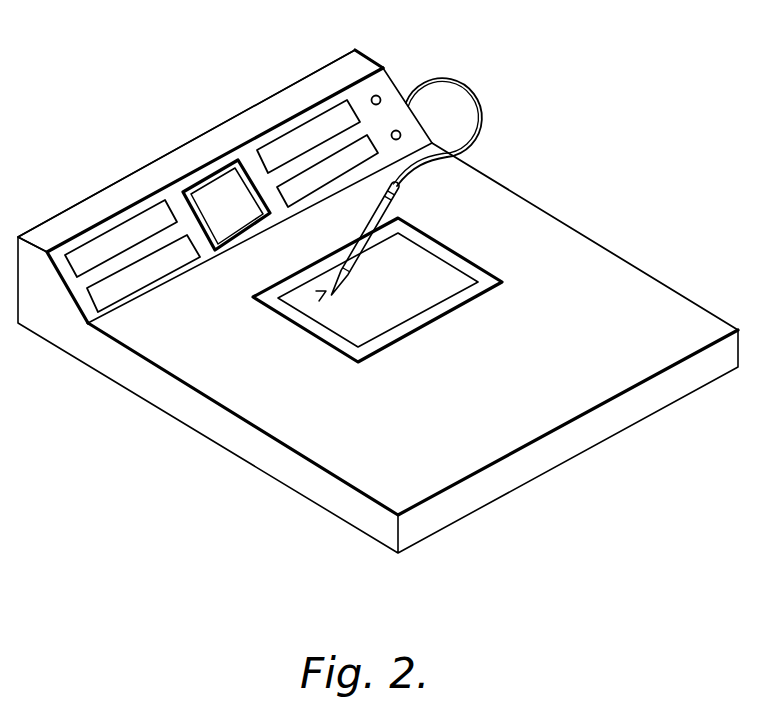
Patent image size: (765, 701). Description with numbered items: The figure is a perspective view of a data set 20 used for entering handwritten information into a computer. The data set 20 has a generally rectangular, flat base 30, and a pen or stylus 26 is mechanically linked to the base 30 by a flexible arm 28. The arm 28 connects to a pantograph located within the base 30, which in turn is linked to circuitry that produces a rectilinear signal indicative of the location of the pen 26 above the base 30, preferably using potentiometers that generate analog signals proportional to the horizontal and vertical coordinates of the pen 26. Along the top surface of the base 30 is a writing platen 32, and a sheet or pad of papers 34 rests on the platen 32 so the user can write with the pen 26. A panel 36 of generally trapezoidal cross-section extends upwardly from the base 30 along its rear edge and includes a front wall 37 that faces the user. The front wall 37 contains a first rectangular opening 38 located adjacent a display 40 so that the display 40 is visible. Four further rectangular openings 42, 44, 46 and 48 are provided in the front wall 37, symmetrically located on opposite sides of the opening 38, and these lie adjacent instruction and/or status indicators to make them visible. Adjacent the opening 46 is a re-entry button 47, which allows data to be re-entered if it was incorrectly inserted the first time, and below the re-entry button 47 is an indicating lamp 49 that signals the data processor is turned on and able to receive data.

The data set 20 is at (238, 456).
The pen or stylus 26 is at (387, 214).
The flexible arm 28 is at (480, 142).
The base 30 is at (545, 225).
The writing platen 32 is at (332, 343).
The sheet or pad of papers 34 is at (418, 302).
The panel 36 is at (367, 62).
The front wall 37 is at (172, 192).
The first rectangular opening 38 is at (250, 180).
The display 40 is at (208, 192).
The rectangular opening 42 is at (105, 242).
The rectangular opening 44 is at (105, 293).
The rectangular opening 46 is at (330, 123).
The re-entry button 47 is at (381, 97).
The rectangular opening 48 is at (307, 188).
The indicating lamp 49 is at (401, 134).